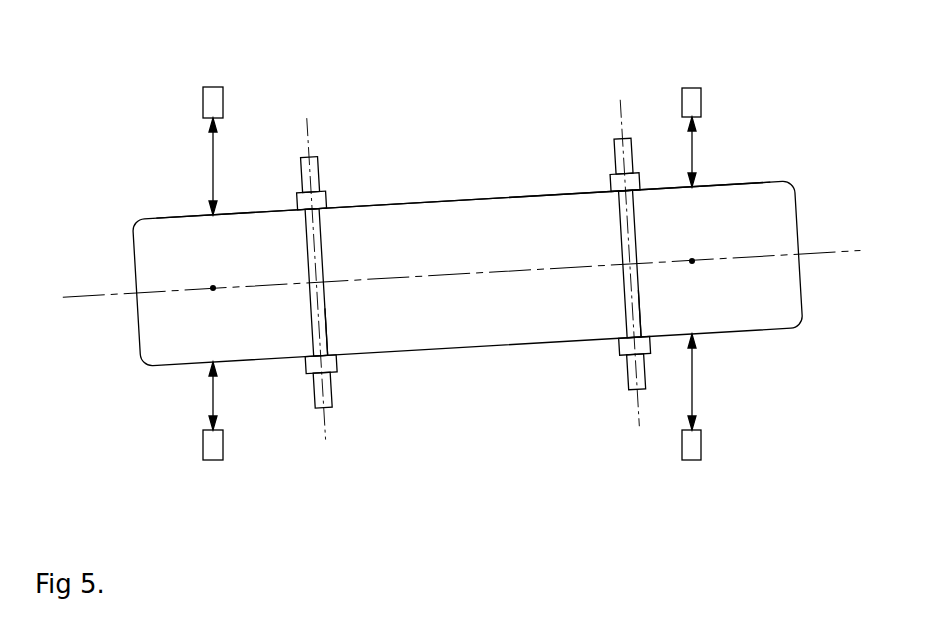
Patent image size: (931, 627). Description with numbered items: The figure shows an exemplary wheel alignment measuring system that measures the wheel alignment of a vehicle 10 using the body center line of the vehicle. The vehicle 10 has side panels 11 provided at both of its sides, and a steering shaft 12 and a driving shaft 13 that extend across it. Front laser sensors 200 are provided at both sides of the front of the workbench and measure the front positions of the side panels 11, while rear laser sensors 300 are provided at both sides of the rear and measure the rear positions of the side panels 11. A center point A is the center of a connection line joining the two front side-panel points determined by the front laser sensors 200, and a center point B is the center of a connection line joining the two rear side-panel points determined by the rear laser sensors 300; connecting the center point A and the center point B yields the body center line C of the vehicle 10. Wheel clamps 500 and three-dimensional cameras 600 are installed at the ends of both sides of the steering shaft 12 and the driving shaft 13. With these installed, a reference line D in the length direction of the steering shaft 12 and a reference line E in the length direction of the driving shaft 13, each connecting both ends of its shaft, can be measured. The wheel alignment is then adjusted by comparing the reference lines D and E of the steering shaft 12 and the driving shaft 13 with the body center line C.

The vehicle 10 is at (457, 325).
The side panels 11 is at (491, 199).
The steering shaft 12 is at (623, 288).
The driving shaft 13 is at (312, 308).
The front laser sensors 200 is at (692, 88).
The rear laser sensors 300 is at (213, 87).
The wheel clamps 500 is at (325, 198).
The 3D cameras 600 is at (318, 162).
The center point A is at (692, 261).
The center point B is at (212, 288).
The body center line C is at (843, 250).
The reference line D is at (633, 318).
The reference line E is at (322, 337).